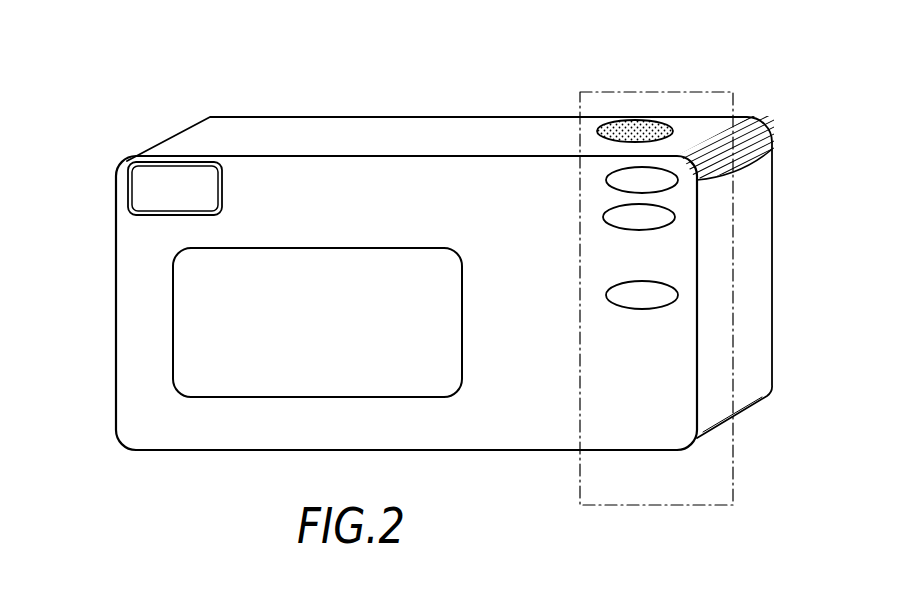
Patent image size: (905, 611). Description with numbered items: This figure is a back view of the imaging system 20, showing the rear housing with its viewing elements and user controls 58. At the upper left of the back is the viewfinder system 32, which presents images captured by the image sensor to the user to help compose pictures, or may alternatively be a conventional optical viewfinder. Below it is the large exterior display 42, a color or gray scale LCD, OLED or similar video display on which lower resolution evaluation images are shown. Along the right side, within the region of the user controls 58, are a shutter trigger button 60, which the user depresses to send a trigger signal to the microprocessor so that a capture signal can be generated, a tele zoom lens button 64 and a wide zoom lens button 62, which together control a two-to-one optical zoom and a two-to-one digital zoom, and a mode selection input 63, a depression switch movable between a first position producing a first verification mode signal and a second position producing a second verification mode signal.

The imaging system 20 is at (166, 440).
The viewfinder system 32 is at (140, 188).
The exterior display 42 is at (180, 290).
The user controls 58 is at (578, 103).
The shutter trigger button 60 is at (638, 125).
The wide zoom lens button 62 is at (675, 217).
The mode selection input 63 is at (678, 293).
The tele zoom lens button 64 is at (678, 182).